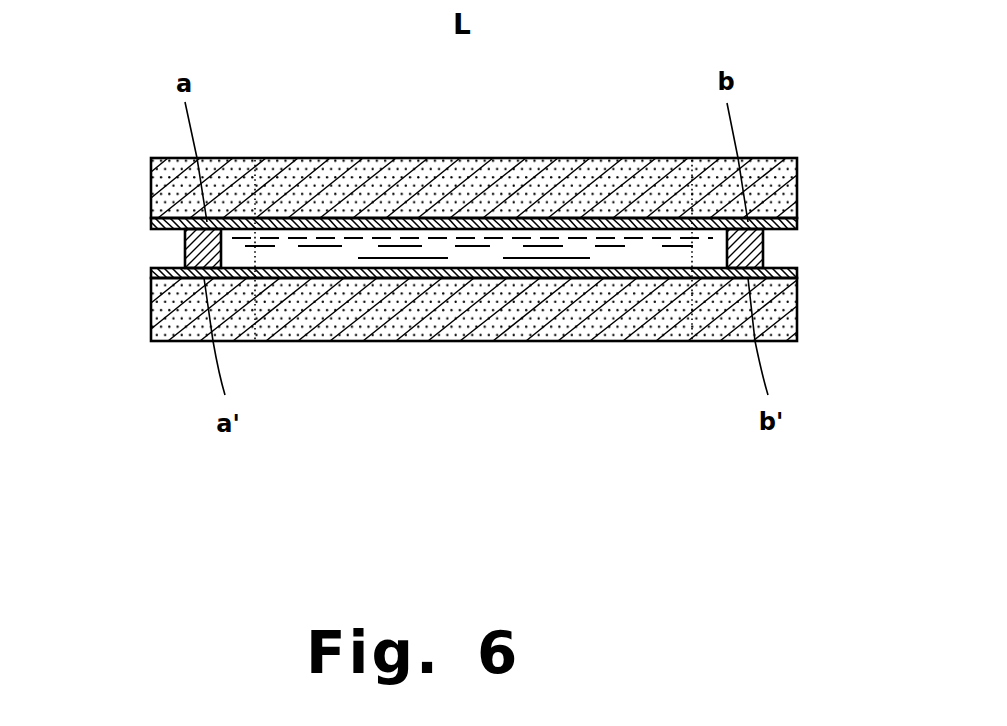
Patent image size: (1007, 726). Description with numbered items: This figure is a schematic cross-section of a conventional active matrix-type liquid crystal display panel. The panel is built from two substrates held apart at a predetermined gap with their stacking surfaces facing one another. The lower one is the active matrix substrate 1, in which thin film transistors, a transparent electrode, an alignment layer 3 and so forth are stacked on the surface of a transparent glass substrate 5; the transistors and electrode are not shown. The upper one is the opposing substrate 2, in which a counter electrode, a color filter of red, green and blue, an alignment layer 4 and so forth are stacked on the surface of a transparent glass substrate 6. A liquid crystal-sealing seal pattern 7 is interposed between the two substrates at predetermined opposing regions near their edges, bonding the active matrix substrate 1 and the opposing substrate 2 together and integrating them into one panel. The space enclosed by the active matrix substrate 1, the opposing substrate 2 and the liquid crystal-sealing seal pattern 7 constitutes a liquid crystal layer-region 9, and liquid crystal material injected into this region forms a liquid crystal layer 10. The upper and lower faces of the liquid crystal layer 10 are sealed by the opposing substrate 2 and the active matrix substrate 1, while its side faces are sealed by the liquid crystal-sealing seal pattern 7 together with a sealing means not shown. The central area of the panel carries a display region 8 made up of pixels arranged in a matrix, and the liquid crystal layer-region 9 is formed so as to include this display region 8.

The active matrix substrate 1 is at (142, 270).
The opposing substrate 2 is at (142, 160).
The alignment layer 3 is at (797, 275).
The alignment layer 4 is at (797, 224).
The transparent glass substrate 5 is at (797, 316).
The transparent glass substrate 6 is at (797, 180).
The liquid crystal-sealing seal pattern 7 is at (166, 255).
The display region 8 is at (257, 147).
The liquid crystal layer-region 9 is at (643, 242).
The liquid crystal layer 10 is at (478, 253).